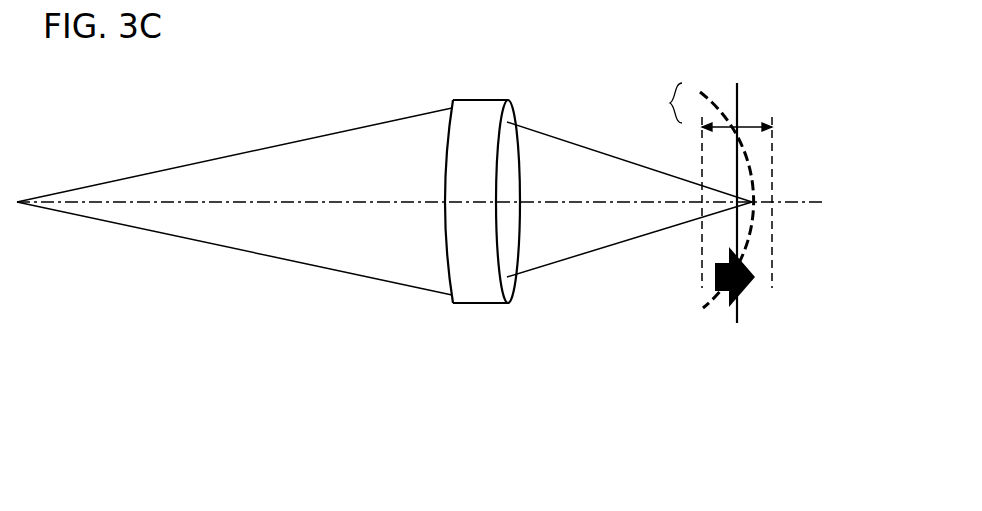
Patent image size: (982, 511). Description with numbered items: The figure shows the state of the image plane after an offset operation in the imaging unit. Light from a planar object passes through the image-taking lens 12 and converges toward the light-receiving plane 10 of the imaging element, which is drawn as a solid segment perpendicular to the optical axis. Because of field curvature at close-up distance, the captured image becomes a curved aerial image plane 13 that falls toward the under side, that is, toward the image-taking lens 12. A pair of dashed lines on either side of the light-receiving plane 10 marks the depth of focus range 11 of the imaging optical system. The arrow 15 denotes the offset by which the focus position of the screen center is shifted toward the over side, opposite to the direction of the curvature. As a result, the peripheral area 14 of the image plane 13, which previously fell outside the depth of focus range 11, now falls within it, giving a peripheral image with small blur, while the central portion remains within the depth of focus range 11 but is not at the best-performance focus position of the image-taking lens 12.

The light-receiving plane 10 is at (738, 95).
The depth of focus range 11 is at (746, 123).
The image-taking lens 12 is at (472, 110).
The image plane 13 is at (703, 310).
The peripheral area 14 is at (656, 103).
The arrow 15 is at (745, 290).